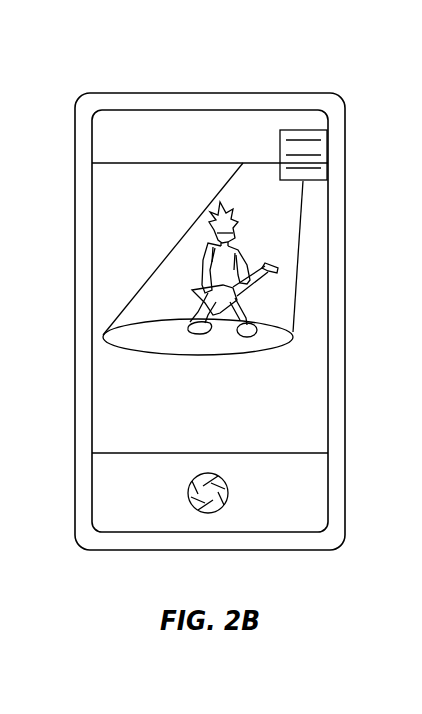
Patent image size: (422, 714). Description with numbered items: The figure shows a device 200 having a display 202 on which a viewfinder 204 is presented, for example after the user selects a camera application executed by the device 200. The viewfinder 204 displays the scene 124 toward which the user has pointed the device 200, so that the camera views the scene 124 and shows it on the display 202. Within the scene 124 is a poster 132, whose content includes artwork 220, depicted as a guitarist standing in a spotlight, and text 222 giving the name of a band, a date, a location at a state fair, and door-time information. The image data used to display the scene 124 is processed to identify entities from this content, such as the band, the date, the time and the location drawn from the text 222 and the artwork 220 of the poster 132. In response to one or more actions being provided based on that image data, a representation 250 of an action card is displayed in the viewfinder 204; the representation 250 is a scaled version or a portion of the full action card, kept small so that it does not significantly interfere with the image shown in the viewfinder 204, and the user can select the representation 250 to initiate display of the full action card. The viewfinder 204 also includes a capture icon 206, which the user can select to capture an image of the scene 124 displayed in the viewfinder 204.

The device 200 is at (220, 93).
The display 202 is at (327, 110).
The scene 124 is at (143, 130).
The poster 132 is at (107, 163).
The representation of an action card 250 is at (310, 181).
The artwork 220 is at (106, 252).
The text 222 is at (99, 400).
The viewfinder 204 is at (309, 515).
The capture icon 206 is at (222, 507).